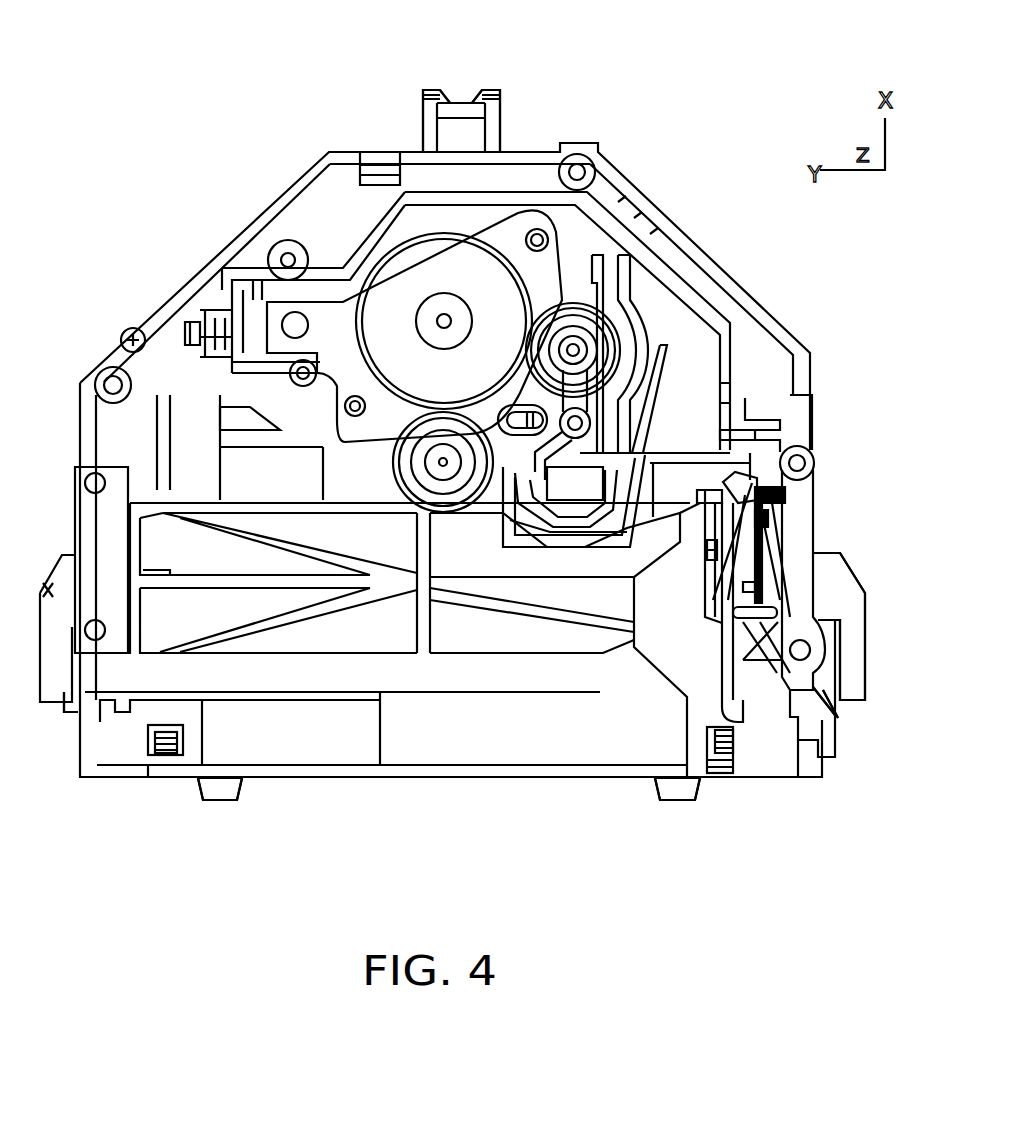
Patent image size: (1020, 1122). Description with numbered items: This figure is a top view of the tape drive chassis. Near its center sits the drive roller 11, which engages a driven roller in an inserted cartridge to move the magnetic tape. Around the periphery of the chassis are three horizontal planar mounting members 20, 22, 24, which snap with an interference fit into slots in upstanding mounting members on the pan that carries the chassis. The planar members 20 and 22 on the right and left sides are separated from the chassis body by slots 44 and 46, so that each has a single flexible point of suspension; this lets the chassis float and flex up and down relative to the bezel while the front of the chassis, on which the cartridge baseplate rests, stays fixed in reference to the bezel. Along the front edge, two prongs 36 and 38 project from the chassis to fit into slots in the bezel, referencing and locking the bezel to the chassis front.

The planar mounting member 24 is at (457, 103).
The planar mounting member 22 is at (43, 590).
The drive roller 11 is at (428, 470).
The planar mounting member 20 is at (850, 652).
The slot 46 is at (72, 705).
The slot 44 is at (827, 697).
The prong 36 is at (220, 802).
The prong 38 is at (670, 802).